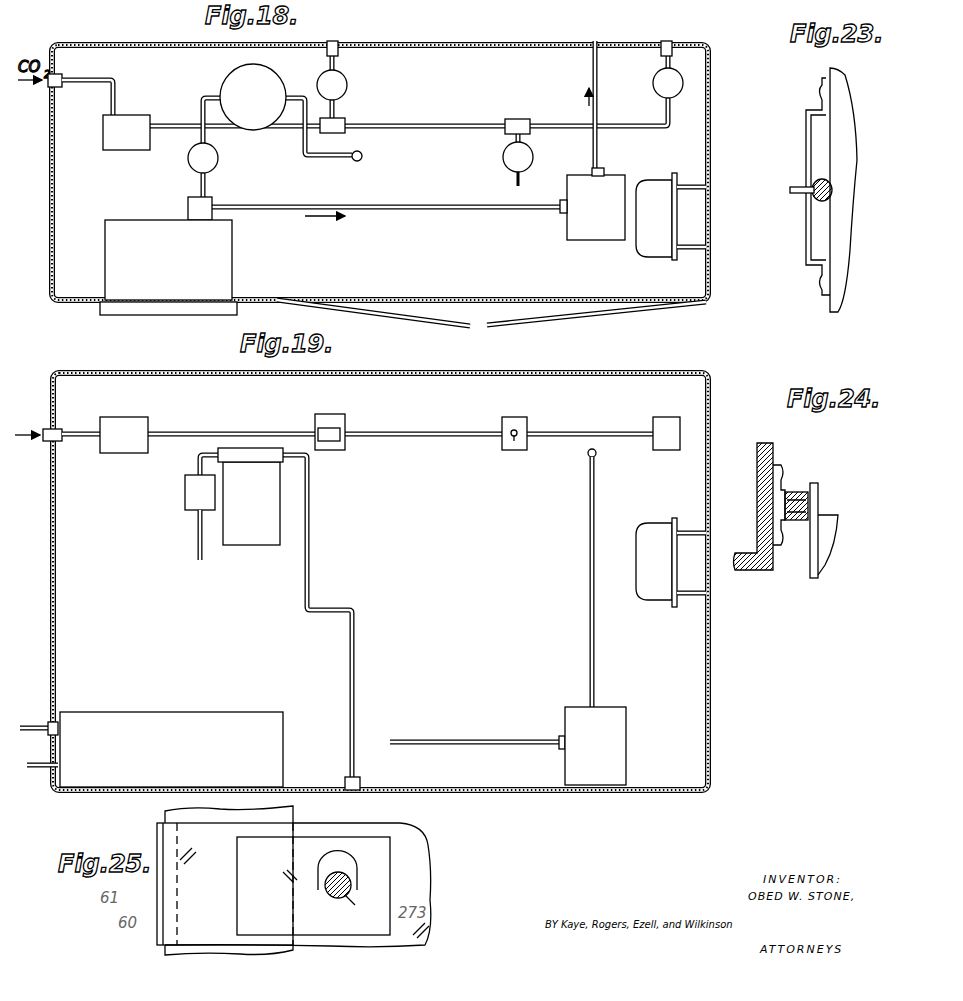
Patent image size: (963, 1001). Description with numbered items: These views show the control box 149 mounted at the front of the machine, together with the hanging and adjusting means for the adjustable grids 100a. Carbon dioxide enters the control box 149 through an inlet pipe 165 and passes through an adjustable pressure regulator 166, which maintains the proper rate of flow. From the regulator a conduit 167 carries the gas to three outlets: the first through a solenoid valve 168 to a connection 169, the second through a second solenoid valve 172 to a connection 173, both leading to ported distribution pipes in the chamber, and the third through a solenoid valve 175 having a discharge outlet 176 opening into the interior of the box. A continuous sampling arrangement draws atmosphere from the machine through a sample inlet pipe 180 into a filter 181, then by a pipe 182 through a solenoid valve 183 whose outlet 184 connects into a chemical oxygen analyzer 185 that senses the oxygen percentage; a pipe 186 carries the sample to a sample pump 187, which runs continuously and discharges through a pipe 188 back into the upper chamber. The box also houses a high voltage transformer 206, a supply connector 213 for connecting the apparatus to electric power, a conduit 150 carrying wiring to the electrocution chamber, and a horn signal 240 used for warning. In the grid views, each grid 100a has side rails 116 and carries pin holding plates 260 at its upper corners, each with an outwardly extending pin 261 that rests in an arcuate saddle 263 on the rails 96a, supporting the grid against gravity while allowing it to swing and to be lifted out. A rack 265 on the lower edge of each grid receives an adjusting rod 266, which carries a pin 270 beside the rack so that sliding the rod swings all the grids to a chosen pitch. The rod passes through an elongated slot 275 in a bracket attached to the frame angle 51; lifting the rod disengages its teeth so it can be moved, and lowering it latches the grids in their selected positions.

In FIG. 18, the control box 149 is at (692, 44).
In FIG. 19, the control box 149 is at (712, 692).
In FIG. 18, the inlet pipe 165 is at (40, 104).
In FIG. 19, the inlet pipe 165 is at (47, 445).
In FIG. 18, the pressure regulator 166 is at (103, 123).
In FIG. 19, the pressure regulator 166 is at (107, 452).
In FIG. 18, the conduit 167 is at (291, 130).
In FIG. 19, the conduit 167 is at (165, 434).
In FIG. 18, the solenoid valve 168 is at (320, 74).
In FIG. 19, the solenoid valve 168 is at (315, 422).
In FIG. 18, the connection 169 is at (331, 36).
In FIG. 18, the second solenoid valve 172 is at (654, 90).
In FIG. 19, the second solenoid valve 172 is at (655, 428).
In FIG. 18, the connection 173 is at (668, 38).
In FIG. 18, the solenoid valve 175 is at (503, 160).
In FIG. 19, the solenoid valve 175 is at (528, 428).
In FIG. 18, the discharge outlet 176 is at (514, 182).
In FIG. 19, the discharge outlet 176 is at (514, 440).
In FIG. 18, the sample inlet pipe 180 is at (352, 162).
In FIG. 19, the sample inlet pipe 180 is at (358, 690).
In FIG. 18, the filter 181 is at (236, 80).
In FIG. 19, the filter 181 is at (257, 540).
In FIG. 18, the pipe 182 is at (200, 108).
In FIG. 19, the pipe 182 is at (195, 463).
In FIG. 18, the solenoid valve 183 is at (188, 163).
In FIG. 19, the solenoid valve 183 is at (185, 497).
In FIG. 18, the outlet 184 is at (200, 189).
In FIG. 19, the outlet 184 is at (197, 540).
In FIG. 18, the chemical oxygen analyzer 185 is at (238, 262).
In FIG. 18, the pipe 186 is at (407, 212).
In FIG. 19, the pipe 186 is at (478, 740).
In FIG. 18, the sample pump 187 is at (567, 233).
In FIG. 19, the sample pump 187 is at (620, 712).
In FIG. 18, the pipe 188 is at (590, 78).
In FIG. 19, the pipe 188 is at (590, 490).
In FIG. 19, the high voltage transformer 206 is at (177, 712).
In FIG. 19, the supply connector 213 is at (48, 722).
In FIG. 19, the conduit 150 is at (38, 770).
In FIG. 18, the horn signal 240 is at (643, 253).
In FIG. 19, the horn signal 240 is at (658, 596).
In FIG. 23, the grids 100a is at (862, 100).
In FIG. 24, the grids 100a is at (846, 535).
In FIG. 23, the side rails 116 is at (850, 127).
In FIG. 24, the side rails 116 is at (822, 555).
In FIG. 23, the rack 265 is at (806, 243).
In FIG. 23, the adjusting rod 266 is at (815, 183).
In FIG. 25, the adjusting rod 266 is at (352, 882).
In FIG. 23, the pin 270 is at (800, 194).
In FIG. 24, the pin holding plates 260 is at (820, 490).
In FIG. 24, the pin 261 is at (801, 492).
In FIG. 24, the arcuate saddles 263 is at (798, 522).
In FIG. 24, the rails 96a is at (757, 572).
In FIG. 25, the vertical angles 51 is at (290, 812).
In FIG. 25, the elongated slot 275 is at (355, 864).